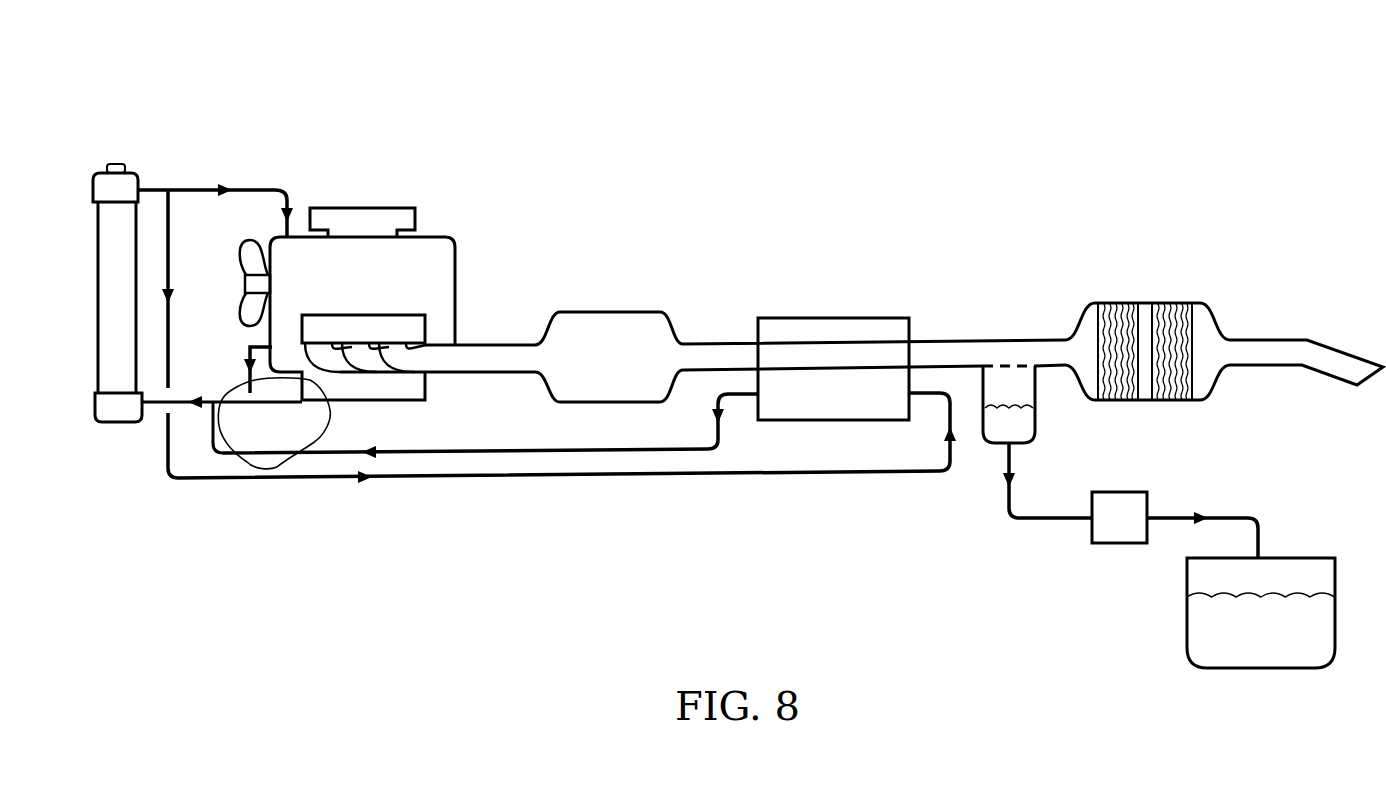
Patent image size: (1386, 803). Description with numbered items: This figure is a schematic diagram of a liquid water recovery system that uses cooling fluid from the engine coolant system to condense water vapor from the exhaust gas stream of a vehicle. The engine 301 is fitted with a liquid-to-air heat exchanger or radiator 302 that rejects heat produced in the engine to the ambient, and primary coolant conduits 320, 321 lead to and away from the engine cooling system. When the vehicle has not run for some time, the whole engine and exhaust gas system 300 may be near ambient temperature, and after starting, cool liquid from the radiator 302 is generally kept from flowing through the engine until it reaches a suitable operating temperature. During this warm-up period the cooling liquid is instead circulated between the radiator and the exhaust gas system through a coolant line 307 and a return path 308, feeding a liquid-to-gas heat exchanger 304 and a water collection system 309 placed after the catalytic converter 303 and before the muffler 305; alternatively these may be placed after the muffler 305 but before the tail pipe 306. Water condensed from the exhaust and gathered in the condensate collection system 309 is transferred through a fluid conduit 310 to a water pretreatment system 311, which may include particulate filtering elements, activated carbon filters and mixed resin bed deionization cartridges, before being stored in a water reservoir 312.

The engine and exhaust gas system 300 is at (1040, 126).
The engine 301 is at (380, 208).
The radiator 302 is at (140, 173).
The catalytic converter 303 is at (622, 312).
The liquid-to-gas heat exchanger 304 is at (845, 318).
The muffler 305 is at (1145, 303).
The tail pipe 306 is at (1350, 345).
The coolant line 307 is at (672, 477).
The coolant return line 308 is at (725, 447).
The water collection system 309 is at (1035, 428).
The fluid conduit 310 is at (1007, 507).
The water pretreatment system 311 is at (1112, 543).
The water reservoir 312 is at (1185, 613).
The primary coolant conduit 320 is at (250, 393).
The primary coolant conduit 321 is at (253, 188).